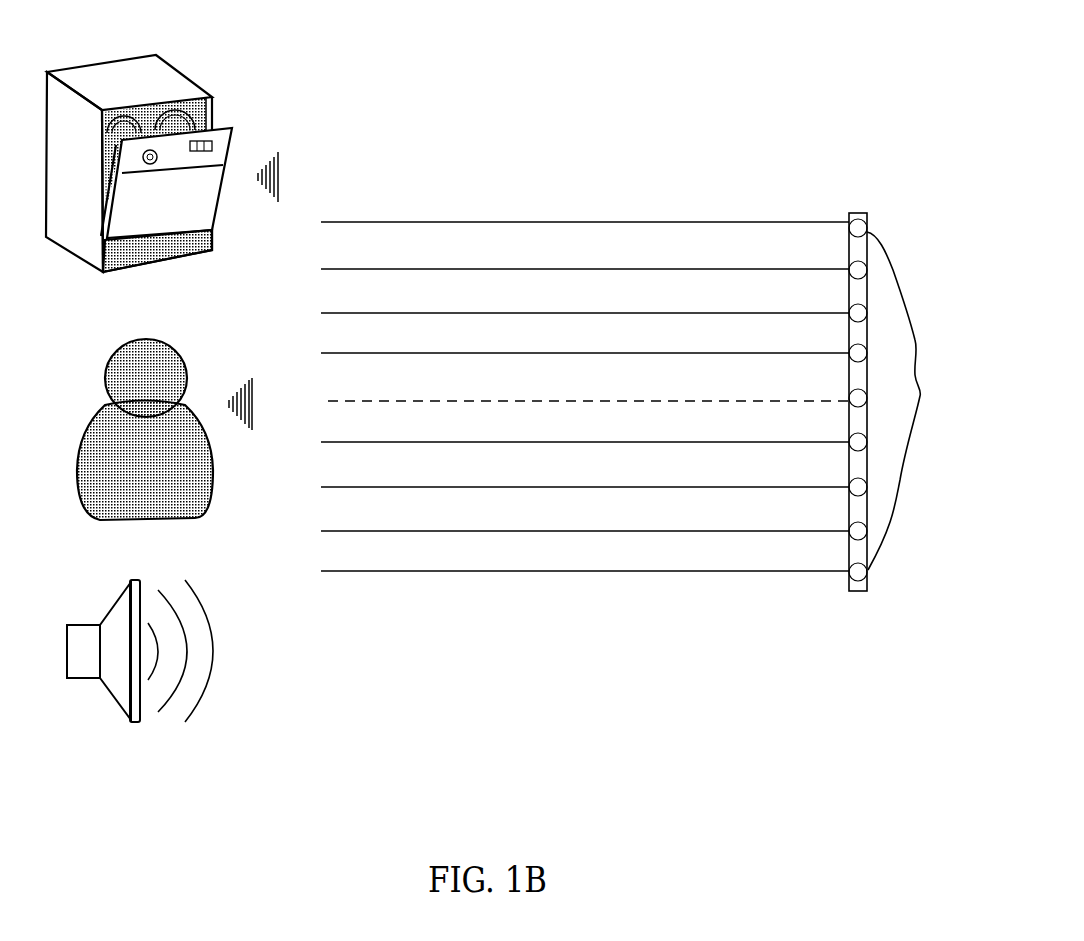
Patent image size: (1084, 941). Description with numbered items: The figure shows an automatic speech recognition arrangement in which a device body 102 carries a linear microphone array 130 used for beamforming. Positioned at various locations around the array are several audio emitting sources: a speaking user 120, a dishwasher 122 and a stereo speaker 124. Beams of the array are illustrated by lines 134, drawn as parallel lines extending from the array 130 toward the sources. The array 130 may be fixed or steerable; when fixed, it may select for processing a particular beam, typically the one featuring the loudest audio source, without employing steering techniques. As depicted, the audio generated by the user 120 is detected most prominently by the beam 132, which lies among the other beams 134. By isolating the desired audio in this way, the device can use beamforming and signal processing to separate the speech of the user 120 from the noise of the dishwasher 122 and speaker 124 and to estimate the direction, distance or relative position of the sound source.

The electronic device 102 is at (888, 377).
The speaking user 120 is at (118, 350).
The dishwasher 122 is at (110, 62).
The stereo speaker 124 is at (130, 582).
The linear microphone array 130 is at (917, 342).
The beam 132 is at (457, 400).
The lines 134 is at (406, 221).